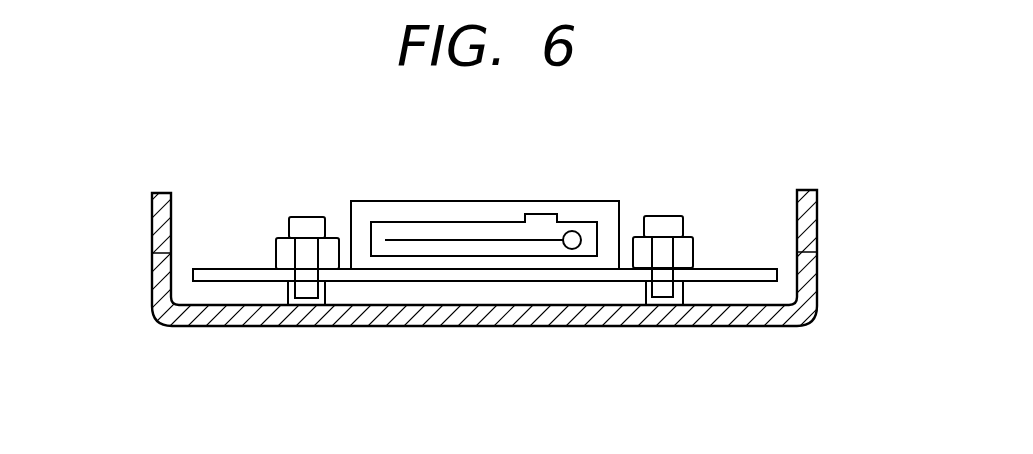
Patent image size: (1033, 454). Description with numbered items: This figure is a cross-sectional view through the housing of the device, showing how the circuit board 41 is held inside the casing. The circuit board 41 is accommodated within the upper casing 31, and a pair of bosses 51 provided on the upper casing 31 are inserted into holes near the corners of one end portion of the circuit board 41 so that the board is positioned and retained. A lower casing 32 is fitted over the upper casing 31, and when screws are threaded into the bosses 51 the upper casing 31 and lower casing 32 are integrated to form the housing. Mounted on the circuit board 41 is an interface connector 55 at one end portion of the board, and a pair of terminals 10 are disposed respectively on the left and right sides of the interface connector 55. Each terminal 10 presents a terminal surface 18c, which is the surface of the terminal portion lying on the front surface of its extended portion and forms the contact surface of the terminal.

The terminal 10 is at (278, 248).
The terminal surface 18c is at (307, 287).
The upper casing 31 is at (478, 307).
The lower casing 32 is at (158, 220).
The circuit board 41 is at (773, 269).
The boss 51 is at (310, 230).
The interface connector 55 is at (450, 212).